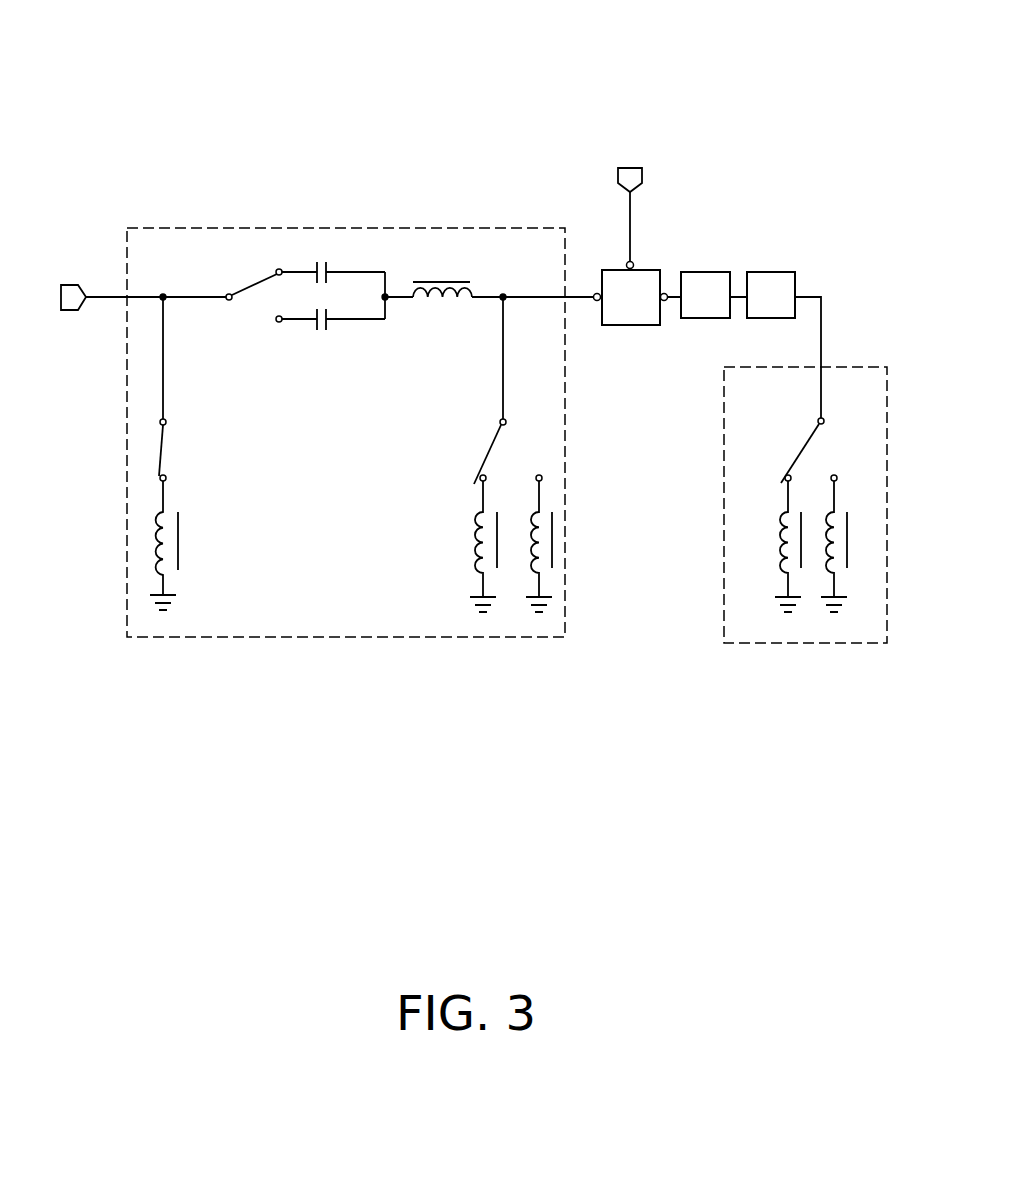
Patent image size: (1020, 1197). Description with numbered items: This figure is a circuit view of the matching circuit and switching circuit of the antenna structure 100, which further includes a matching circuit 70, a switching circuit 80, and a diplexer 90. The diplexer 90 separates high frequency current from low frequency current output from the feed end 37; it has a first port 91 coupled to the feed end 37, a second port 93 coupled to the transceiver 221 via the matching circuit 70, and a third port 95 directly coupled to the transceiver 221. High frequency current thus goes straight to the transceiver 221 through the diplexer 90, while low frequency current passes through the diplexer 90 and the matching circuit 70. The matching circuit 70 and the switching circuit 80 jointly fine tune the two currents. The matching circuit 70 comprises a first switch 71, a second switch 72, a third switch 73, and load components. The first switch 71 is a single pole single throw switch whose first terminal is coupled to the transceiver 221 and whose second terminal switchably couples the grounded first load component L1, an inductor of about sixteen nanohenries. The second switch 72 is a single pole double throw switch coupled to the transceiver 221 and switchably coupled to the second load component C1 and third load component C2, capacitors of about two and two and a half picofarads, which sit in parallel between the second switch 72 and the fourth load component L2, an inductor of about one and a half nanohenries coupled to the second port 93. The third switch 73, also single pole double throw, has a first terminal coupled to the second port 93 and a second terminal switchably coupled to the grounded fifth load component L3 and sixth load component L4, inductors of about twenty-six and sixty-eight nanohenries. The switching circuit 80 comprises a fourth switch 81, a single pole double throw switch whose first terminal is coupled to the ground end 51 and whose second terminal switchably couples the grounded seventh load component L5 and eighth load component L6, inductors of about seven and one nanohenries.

The antenna structure 100 is at (450, 64).
The transceiver 221 is at (74, 291).
The matching circuit 70 is at (354, 228).
The first switch 71 is at (163, 452).
The second switch 72 is at (254, 290).
The third switch 73 is at (490, 458).
The second load component C1 is at (333, 258).
The third load component C2 is at (330, 336).
The first load component L1 is at (182, 545).
The fourth load component L2 is at (442, 275).
The fifth load component L3 is at (467, 546).
The sixth load component L4 is at (528, 543).
The seventh load component L5 is at (773, 546).
The eighth load component L6 is at (851, 543).
The diplexer 90 is at (625, 313).
The first port 91 is at (667, 303).
The second port 93 is at (596, 292).
The third port 95 is at (632, 262).
The feed end 37 is at (710, 282).
The ground end 51 is at (776, 283).
The switching circuit 80 is at (765, 643).
The fourth switch 81 is at (806, 447).